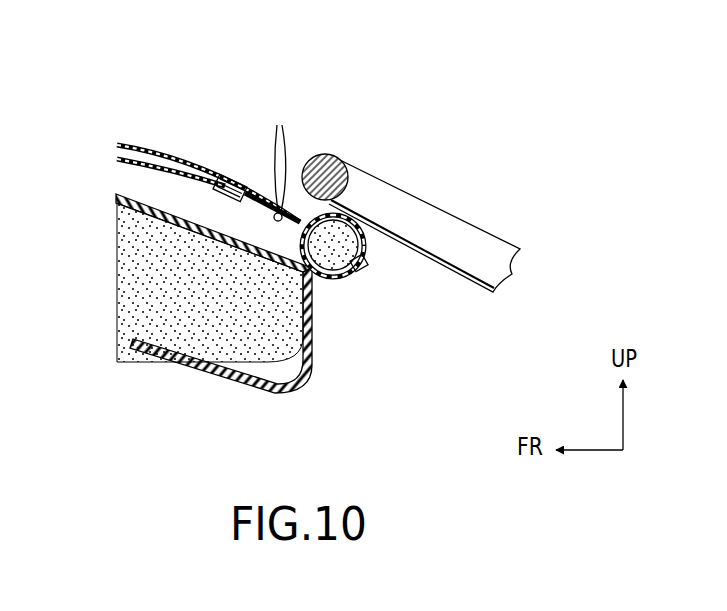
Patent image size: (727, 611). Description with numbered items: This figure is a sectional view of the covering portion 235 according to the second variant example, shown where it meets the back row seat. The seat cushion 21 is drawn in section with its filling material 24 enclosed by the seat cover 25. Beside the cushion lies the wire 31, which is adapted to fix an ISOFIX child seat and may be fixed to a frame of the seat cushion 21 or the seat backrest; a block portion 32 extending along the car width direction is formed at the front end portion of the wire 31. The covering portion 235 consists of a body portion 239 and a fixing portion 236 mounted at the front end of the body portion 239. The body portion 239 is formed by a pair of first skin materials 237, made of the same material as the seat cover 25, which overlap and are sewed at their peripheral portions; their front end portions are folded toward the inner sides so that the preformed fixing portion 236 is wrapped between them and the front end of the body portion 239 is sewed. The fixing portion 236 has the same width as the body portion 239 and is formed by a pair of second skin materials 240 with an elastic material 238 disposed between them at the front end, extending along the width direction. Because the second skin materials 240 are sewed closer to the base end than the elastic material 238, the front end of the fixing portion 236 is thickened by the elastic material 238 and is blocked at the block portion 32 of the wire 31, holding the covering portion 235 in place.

The seat cushion 21 is at (315, 325).
The filling material 24 is at (228, 340).
The seat cover 25 is at (128, 194).
The wire 31 is at (477, 222).
The block portion 32 is at (323, 157).
The covering portion 235 is at (237, 158).
The fixing portion 236 is at (362, 277).
The first skin material 237 is at (224, 178).
The elastic material 238 is at (342, 235).
The body portion 239 is at (138, 142).
The second skin material 240 is at (279, 159).